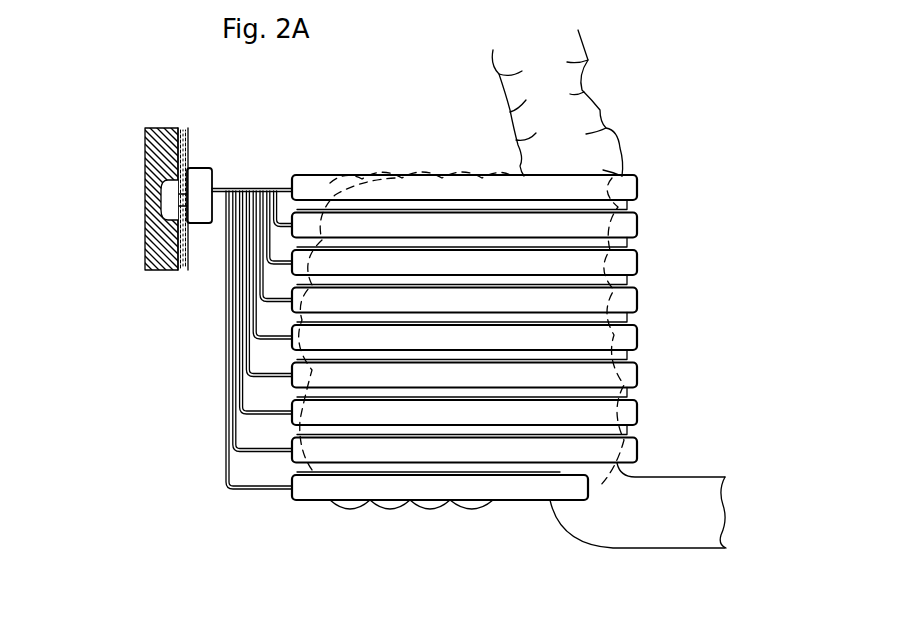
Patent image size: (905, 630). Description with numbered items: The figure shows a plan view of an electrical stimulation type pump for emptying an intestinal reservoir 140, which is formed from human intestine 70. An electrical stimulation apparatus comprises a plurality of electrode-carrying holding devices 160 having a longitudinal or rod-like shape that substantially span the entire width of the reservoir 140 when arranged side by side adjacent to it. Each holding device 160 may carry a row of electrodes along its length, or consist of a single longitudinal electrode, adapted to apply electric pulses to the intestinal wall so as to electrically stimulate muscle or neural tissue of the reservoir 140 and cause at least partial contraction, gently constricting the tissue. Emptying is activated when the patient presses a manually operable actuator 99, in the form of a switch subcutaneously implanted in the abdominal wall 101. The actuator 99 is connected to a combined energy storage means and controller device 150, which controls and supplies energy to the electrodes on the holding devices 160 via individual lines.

The human intestine 70 is at (603, 94).
The manually operable actuator 99 is at (165, 200).
The abdominal wall 101 is at (145, 152).
The intestinal reservoir 140 is at (390, 508).
The combined energy storage means and controller device 150 is at (203, 172).
The electrode-carrying holding devices 160 is at (637, 191).